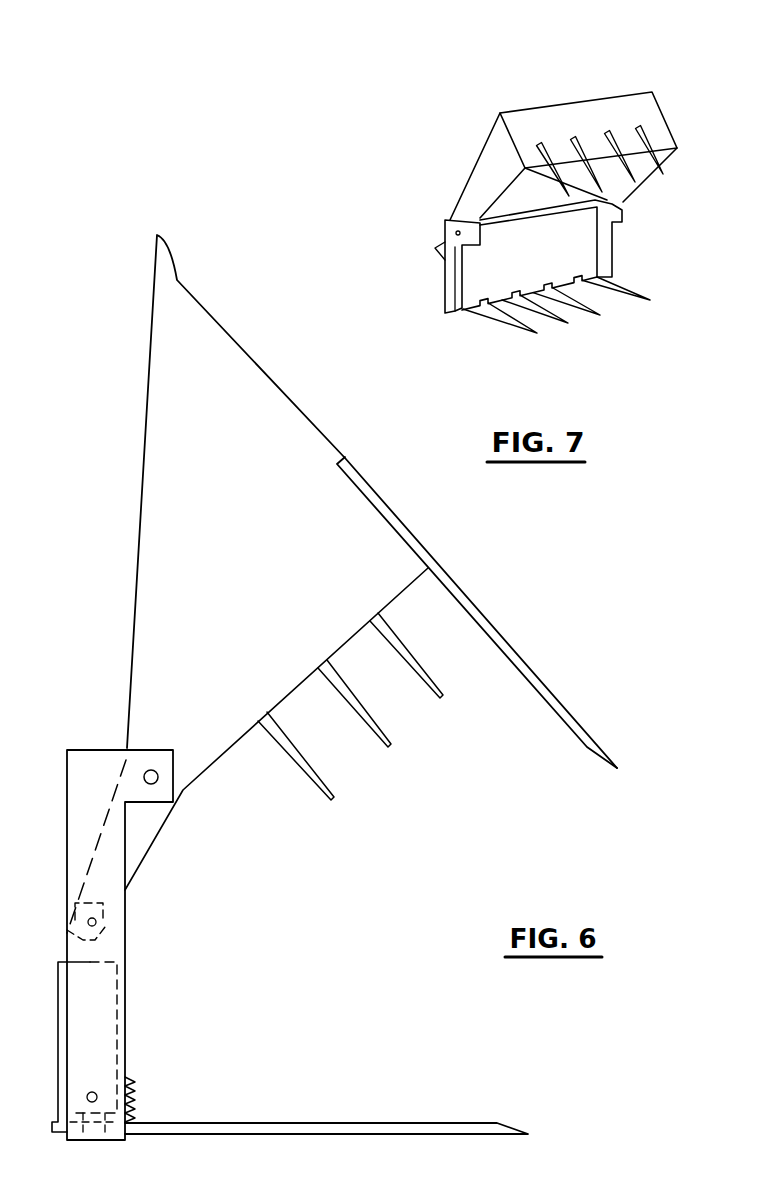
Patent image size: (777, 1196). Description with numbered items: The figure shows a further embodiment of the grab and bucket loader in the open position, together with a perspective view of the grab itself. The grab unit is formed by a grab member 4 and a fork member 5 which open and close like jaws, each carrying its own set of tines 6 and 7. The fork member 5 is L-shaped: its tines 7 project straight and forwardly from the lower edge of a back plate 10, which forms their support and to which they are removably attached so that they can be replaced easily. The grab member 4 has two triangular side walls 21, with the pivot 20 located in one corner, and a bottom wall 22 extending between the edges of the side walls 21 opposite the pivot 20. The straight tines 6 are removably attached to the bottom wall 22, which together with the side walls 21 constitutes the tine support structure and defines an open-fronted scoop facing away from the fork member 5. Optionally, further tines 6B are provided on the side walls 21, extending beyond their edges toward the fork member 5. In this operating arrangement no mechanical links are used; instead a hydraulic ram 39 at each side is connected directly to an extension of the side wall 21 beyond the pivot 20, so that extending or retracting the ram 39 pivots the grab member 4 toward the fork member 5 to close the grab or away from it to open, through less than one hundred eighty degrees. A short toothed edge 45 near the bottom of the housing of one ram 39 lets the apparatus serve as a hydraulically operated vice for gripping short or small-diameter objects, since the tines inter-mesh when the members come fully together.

In FIG. 6, the grab member 4 is at (432, 810).
In FIG. 6, the fork member 5 is at (252, 1027).
In FIG. 6, the tines 6 is at (547, 690).
In FIG. 6, the tines 6B is at (315, 780).
In FIG. 7, the tines 7 is at (620, 305).
In FIG. 6, the tines 7 is at (408, 1123).
In FIG. 7, the back plate 10 is at (497, 268).
In FIG. 6, the back plate 10 is at (117, 942).
In FIG. 6, the pivot 20 is at (152, 780).
In FIG. 7, the side walls 21 is at (487, 178).
In FIG. 6, the side walls 21 is at (229, 562).
In FIG. 7, the bottom wall 22 is at (568, 115).
In FIG. 6, the hydraulic ram 39 is at (98, 1025).
In FIG. 6, the toothed edge 45 is at (133, 1093).